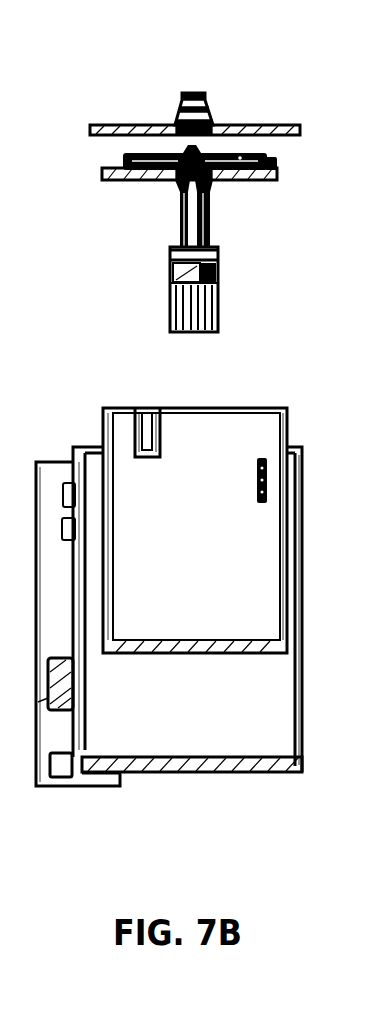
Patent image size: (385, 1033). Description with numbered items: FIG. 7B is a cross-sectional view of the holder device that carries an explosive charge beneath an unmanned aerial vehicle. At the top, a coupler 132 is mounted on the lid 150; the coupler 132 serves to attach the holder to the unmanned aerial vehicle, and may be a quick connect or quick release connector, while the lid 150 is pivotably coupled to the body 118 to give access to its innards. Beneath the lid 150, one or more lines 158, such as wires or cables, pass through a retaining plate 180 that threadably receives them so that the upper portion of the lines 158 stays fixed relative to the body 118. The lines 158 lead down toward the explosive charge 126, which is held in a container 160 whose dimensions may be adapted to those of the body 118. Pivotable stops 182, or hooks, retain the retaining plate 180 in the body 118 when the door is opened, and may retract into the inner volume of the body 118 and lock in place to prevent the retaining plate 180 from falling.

The coupler 132 is at (205, 93).
The lid 150 is at (283, 127).
The lines 158 is at (123, 161).
The retaining plate 180 is at (243, 181).
The explosive charge 126 is at (168, 295).
The container 160 is at (103, 412).
The pivotable stops 182 is at (160, 418).
The body 118 is at (227, 766).